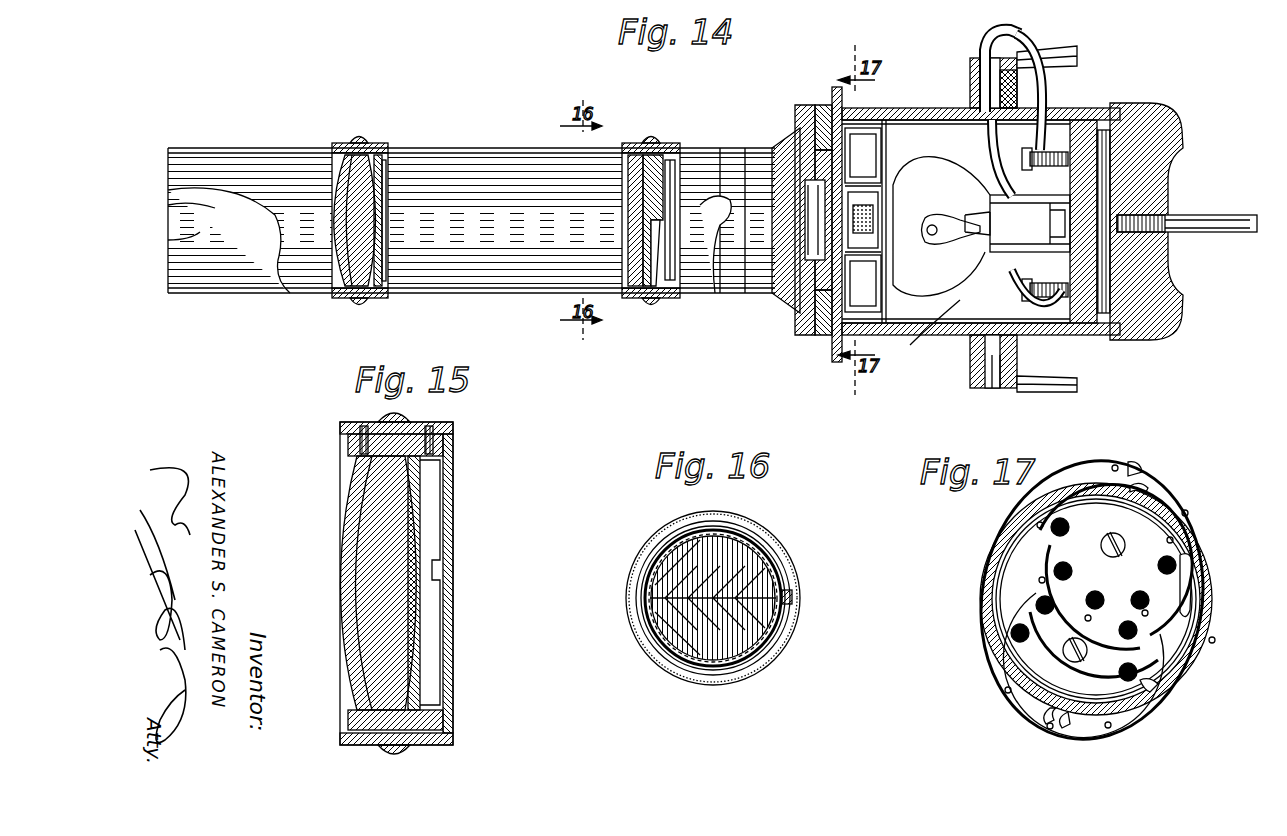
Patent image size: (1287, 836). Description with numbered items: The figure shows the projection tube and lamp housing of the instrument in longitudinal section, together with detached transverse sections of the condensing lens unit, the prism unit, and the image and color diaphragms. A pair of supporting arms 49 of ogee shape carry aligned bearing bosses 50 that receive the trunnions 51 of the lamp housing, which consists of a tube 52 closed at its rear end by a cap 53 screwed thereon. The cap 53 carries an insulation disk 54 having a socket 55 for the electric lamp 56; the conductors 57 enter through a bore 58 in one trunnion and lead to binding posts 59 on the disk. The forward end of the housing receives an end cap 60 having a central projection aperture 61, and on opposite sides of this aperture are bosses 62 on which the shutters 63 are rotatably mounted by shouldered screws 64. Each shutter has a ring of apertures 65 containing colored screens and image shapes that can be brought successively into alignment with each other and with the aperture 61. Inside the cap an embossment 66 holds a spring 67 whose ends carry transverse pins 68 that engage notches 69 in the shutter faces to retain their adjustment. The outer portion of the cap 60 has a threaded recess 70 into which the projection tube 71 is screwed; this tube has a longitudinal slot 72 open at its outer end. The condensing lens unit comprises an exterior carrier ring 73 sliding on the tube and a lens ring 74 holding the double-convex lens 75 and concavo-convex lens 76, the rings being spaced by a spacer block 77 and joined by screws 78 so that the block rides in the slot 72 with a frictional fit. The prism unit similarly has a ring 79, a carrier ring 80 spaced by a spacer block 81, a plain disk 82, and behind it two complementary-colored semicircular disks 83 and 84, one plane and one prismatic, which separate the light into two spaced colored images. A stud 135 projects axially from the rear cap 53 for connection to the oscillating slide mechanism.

In FIG. 14, the supporting arms 49 is at (1060, 56).
In FIG. 14, the bearing bosses 50 is at (985, 56).
In FIG. 14, the trunnions 51 is at (970, 78).
In FIG. 14, the lamp housing tube 52 is at (1045, 335).
In FIG. 17, the lamp housing tube 52 is at (1200, 596).
In FIG. 14, the rear closure cap 53 is at (1142, 322).
In FIG. 14, the insulation disk 54 is at (1085, 130).
In FIG. 14, the socket 55 is at (1100, 215).
In FIG. 14, the electric lamp 56 is at (941, 261).
In FIG. 14, the conductors 57 is at (1008, 30).
In FIG. 14, the bore 58 is at (1020, 84).
In FIG. 14, the binding posts 59 is at (1052, 168).
In FIG. 14, the end cap 60 is at (800, 110).
In FIG. 17, the end cap 60 is at (1208, 576).
In FIG. 14, the projection aperture 61 is at (722, 293).
In FIG. 14, the bosses 62 is at (823, 125).
In FIG. 14, the shutters 63 is at (838, 88).
In FIG. 17, the shutters 63 is at (1150, 486).
In FIG. 14, the shouldered screws 64 is at (850, 150).
In FIG. 14, the shutter apertures 65 is at (858, 118).
In FIG. 17, the embossment 66 is at (1162, 632).
In FIG. 17, the spring 67 is at (1196, 612).
In FIG. 17, the transverse pins 68 is at (1196, 552).
In FIG. 17, the notches 69 is at (1130, 468).
In FIG. 14, the recess 70 is at (790, 270).
In FIG. 14, the projection tube 71 is at (470, 148).
In FIG. 16, the projection tube 71 is at (770, 560).
In FIG. 14, the longitudinal slot 72 is at (215, 225).
In FIG. 14, the exterior carrier ring 73 is at (355, 143).
In FIG. 15, the exterior carrier ring 73 is at (455, 426).
In FIG. 15, the lens ring 74 is at (450, 722).
In FIG. 14, the double-convex lens 75 is at (352, 250).
In FIG. 15, the double-convex lens 75 is at (352, 585).
In FIG. 14, the concavo-convex lens 76 is at (385, 294).
In FIG. 15, the concavo-convex lens 76 is at (412, 642).
In FIG. 15, the spacer block 77 is at (348, 440).
In FIG. 15, the screws 78 is at (364, 424).
In FIG. 14, the prism ring 79 is at (660, 143).
In FIG. 16, the prism ring 79 is at (652, 545).
In FIG. 16, the carrier ring 80 is at (650, 578).
In FIG. 16, the spacer block 81 is at (792, 594).
In FIG. 14, the plain disk 82 is at (632, 235).
In FIG. 14, the colored semicircular disk 83 is at (655, 190).
In FIG. 16, the colored semicircular disk 83 is at (672, 592).
In FIG. 14, the colored semicircular disk 84 is at (650, 298).
In FIG. 16, the colored semicircular disk 84 is at (690, 640).
In FIG. 14, the stud 135 is at (1232, 232).